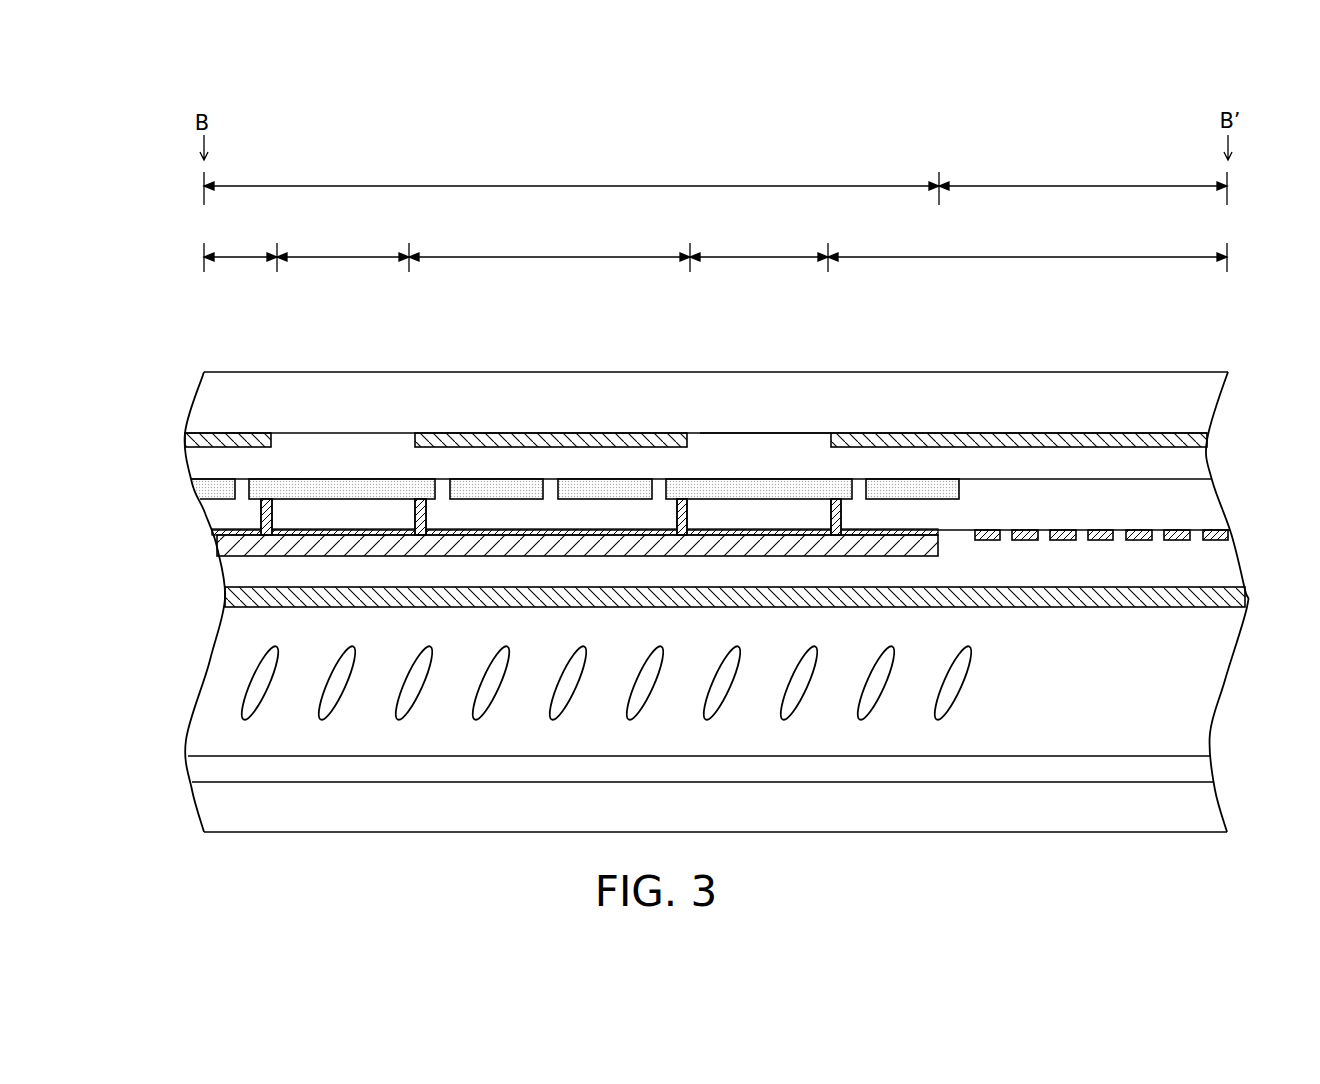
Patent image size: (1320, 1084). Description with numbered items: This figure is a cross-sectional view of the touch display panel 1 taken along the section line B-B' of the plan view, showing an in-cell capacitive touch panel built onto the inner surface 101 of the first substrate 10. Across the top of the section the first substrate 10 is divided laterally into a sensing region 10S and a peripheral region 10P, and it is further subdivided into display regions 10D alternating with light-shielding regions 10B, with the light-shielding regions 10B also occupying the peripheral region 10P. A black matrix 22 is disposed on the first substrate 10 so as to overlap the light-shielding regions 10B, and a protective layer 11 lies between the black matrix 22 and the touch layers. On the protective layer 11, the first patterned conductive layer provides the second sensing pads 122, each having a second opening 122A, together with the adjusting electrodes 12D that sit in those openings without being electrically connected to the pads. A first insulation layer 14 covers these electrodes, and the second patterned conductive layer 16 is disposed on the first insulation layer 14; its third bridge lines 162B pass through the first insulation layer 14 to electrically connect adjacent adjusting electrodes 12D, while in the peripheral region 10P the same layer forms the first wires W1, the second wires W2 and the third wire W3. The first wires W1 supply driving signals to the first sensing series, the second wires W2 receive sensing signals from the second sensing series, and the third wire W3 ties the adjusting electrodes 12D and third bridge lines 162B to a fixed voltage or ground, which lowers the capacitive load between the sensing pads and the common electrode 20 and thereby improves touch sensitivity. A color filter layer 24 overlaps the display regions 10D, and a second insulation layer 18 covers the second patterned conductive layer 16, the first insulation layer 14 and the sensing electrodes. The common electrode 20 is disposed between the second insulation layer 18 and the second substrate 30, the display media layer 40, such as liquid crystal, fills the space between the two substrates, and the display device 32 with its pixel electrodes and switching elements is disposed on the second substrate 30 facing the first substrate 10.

The touch display panel 1 is at (1244, 152).
The first substrate 10 is at (1166, 405).
The sensing region 10S is at (571, 183).
The peripheral region 10P is at (1083, 182).
The light-shielding regions 10B is at (715, 252).
The display regions 10D is at (552, 247).
The inner surface 101 is at (787, 432).
The protective layer 11 is at (200, 463).
The adjusting electrodes 12D is at (330, 485).
The second sensing pads 122 is at (203, 490).
The second opening 122A is at (549, 502).
The first insulation layer 14 is at (218, 513).
The second patterned conductive layer 16 is at (575, 532).
The third bridge lines 162B is at (416, 530).
The first wires W1 is at (987, 545).
The second wires W2 is at (1025, 545).
The third wire W3 is at (1214, 545).
The second insulation layer 18 is at (238, 577).
The common electrode 20 is at (235, 597).
The black matrix 22 is at (215, 440).
The color filter layer 24 is at (242, 547).
The second substrate 30 is at (703, 820).
The display device 32 is at (200, 770).
The display media layer 40 is at (210, 680).